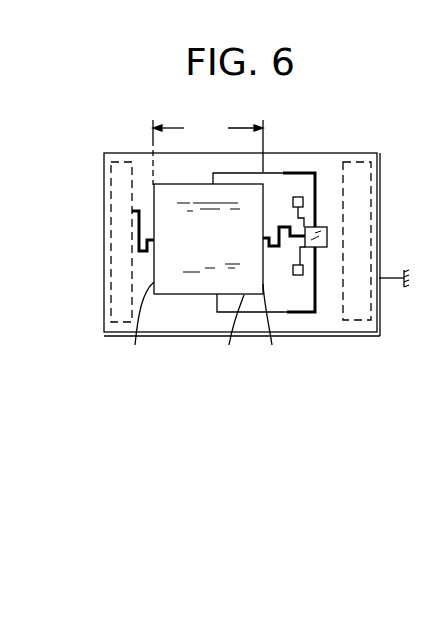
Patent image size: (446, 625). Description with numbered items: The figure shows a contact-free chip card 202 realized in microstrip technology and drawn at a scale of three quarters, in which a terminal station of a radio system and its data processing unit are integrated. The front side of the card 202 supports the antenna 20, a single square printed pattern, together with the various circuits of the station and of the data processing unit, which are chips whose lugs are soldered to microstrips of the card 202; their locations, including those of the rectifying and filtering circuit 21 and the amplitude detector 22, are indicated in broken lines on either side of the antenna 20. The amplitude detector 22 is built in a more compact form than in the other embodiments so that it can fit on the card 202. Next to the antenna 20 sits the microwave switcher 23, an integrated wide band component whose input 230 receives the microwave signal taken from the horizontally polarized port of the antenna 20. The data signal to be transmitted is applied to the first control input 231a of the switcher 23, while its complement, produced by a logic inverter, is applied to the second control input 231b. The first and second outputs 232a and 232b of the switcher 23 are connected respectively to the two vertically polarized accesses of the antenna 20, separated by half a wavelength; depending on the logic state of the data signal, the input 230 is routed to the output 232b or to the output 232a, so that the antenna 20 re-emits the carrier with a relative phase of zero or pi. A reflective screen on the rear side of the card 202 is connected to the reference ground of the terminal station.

The chip card 202 is at (357, 87).
The antenna 20 is at (203, 296).
The rectifying and filtering circuit 21 is at (112, 198).
The amplitude detector 22 is at (143, 231).
The microwave switcher 23 is at (327, 235).
The input 230 is at (291, 262).
The first control input 231a is at (303, 258).
The second control input 231b is at (304, 197).
The first output 232a is at (317, 283).
The second output 232b is at (317, 180).